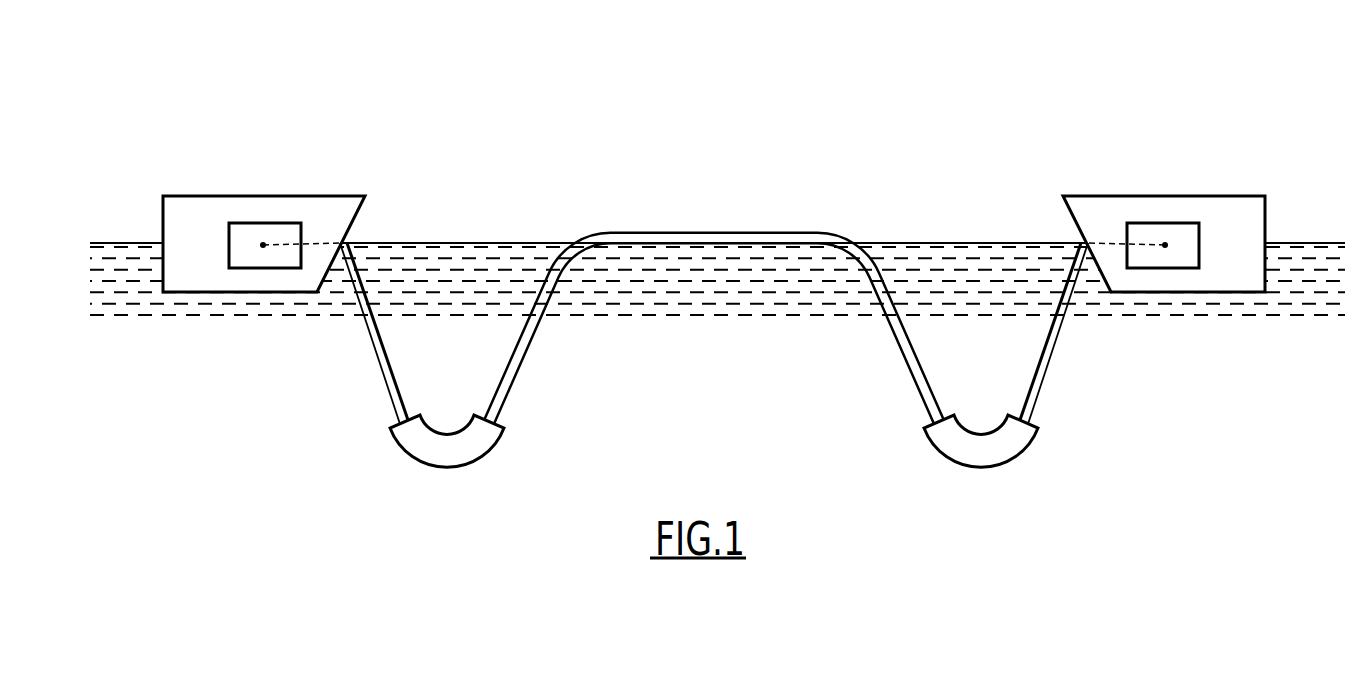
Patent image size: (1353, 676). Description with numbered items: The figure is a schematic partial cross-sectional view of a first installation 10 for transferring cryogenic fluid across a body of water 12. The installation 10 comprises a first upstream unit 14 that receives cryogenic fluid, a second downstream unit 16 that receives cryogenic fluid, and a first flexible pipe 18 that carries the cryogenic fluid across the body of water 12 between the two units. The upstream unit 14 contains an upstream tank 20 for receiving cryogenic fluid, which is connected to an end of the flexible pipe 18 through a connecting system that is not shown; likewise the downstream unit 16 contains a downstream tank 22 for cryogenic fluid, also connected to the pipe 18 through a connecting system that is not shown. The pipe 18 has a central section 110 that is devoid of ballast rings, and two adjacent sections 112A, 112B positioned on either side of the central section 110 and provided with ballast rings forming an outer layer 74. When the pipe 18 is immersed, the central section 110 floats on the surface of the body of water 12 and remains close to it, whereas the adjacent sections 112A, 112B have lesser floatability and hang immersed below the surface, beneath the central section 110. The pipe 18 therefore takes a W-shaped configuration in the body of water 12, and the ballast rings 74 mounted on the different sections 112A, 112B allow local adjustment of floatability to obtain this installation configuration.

The installation 10 is at (717, 308).
The body of water 12 is at (717, 328).
The first upstream unit 14 is at (264, 218).
The second downstream unit 16 is at (1164, 218).
The flexible pipe 18 is at (714, 261).
The upstream tank 20 is at (257, 266).
The downstream tank 22 is at (1171, 266).
The outer layer of ballast rings 74 is at (415, 479).
The central section 110 is at (847, 272).
The first adjacent section 112A is at (527, 502).
The second adjacent section 112B is at (1055, 502).